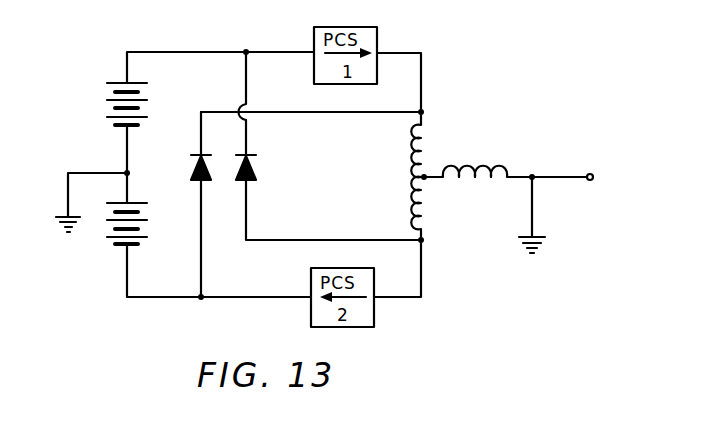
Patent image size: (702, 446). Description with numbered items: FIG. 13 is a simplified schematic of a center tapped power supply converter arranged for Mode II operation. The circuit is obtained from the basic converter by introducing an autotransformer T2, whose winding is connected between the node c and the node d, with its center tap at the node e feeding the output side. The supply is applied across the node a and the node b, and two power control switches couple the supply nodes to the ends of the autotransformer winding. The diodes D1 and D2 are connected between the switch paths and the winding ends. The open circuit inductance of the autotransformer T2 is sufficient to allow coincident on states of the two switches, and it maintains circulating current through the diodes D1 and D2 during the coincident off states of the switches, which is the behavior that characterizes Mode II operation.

The node a (positive battery terminal) a is at (216, 55).
The node b (negative battery terminal) b is at (214, 308).
The node c (transformer winding upper end) c is at (319, 112).
The node d (transformer winding lower end) d is at (429, 241).
The node e (transformer center tap output) e is at (495, 209).
The diode D1 is at (188, 204).
The diode D2 is at (328, 146).
The autotransformer T2 is at (428, 157).